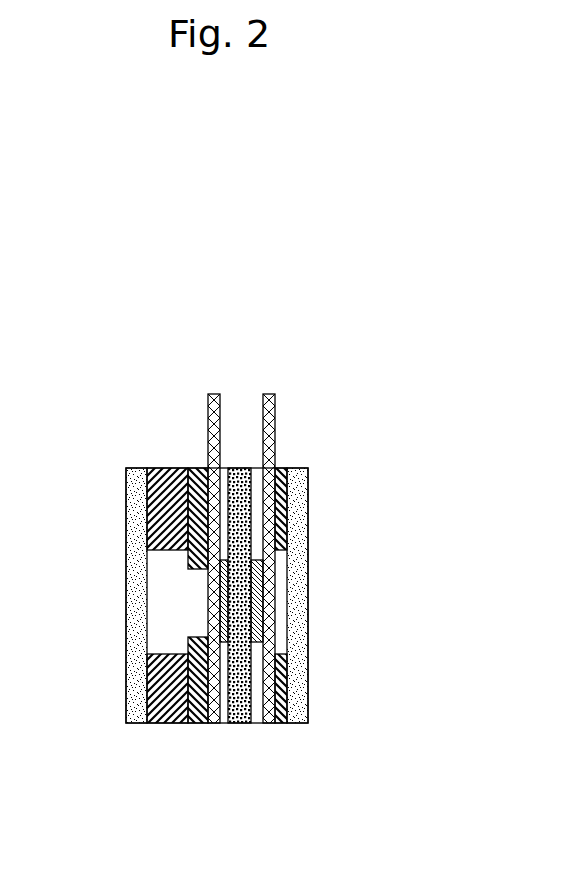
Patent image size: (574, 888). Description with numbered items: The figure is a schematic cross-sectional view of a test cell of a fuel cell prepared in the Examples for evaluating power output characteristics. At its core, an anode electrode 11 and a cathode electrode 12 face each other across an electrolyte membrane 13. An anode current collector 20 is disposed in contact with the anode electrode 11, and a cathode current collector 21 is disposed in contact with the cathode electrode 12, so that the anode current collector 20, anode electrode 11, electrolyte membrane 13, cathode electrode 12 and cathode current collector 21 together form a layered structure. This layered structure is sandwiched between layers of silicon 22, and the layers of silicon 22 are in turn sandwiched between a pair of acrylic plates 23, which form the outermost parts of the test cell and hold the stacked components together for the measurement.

The anode electrode 11 is at (220, 588).
The cathode electrode 12 is at (263, 581).
The electrolyte membrane 13 is at (232, 723).
The anode current collector 20 is at (215, 394).
The cathode current collector 21 is at (269, 394).
The layers of silicon 22 is at (165, 468).
The acrylic plates 23 is at (127, 723).